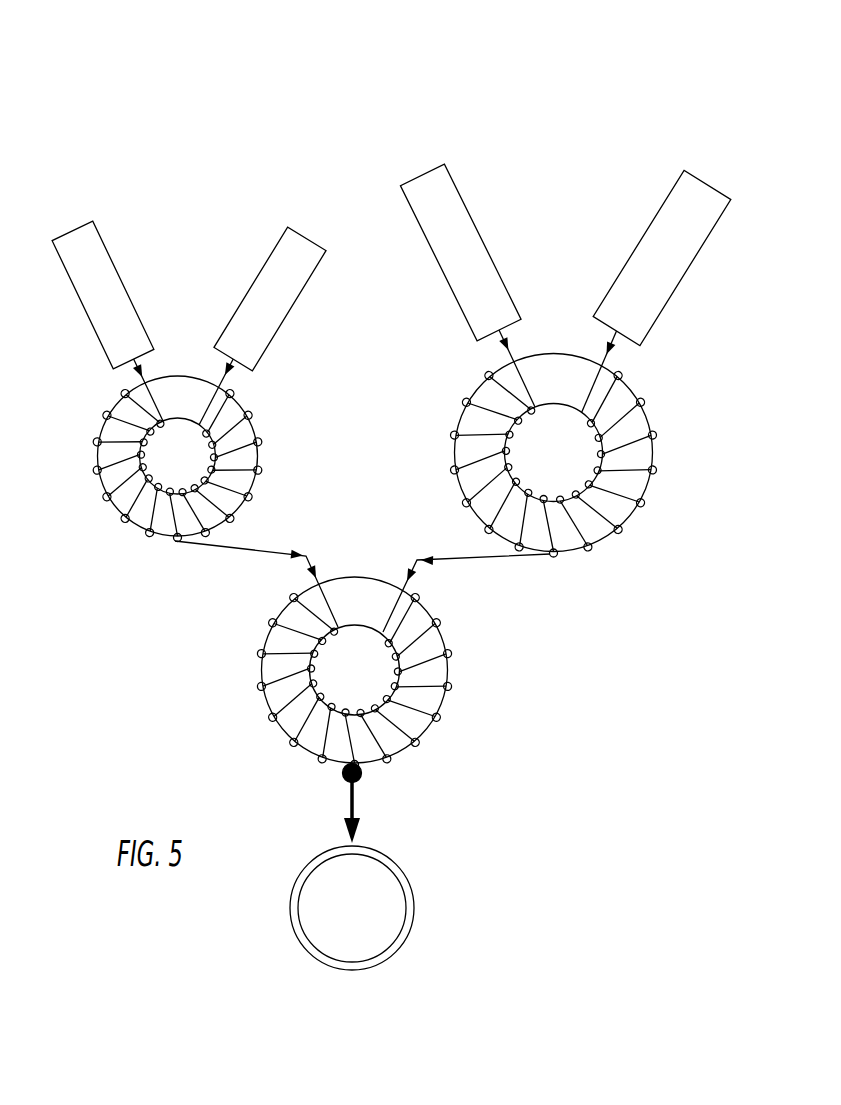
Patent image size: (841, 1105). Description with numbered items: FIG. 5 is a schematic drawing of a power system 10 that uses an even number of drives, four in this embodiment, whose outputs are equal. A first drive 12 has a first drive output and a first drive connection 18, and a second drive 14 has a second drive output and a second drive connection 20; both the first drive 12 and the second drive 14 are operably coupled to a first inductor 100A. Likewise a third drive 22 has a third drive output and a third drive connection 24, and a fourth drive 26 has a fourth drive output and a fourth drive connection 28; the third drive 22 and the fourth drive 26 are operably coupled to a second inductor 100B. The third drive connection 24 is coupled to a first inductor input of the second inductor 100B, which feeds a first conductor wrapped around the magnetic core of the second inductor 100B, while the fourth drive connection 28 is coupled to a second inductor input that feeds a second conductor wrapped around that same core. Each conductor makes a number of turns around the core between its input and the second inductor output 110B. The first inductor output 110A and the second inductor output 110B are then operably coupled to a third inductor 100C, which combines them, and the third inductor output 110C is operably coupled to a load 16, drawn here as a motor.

The system 10 is at (631, 74).
The first drive 12 is at (93, 222).
The second drive 14 is at (302, 230).
The third drive 22 is at (453, 173).
The fourth drive 26 is at (727, 193).
The first drive connection 18 is at (137, 373).
The second drive connection 20 is at (227, 378).
The third drive connection 24 is at (503, 345).
The fourth drive connection 28 is at (613, 353).
The first inductor 100A is at (106, 526).
The second inductor 100B is at (680, 488).
The third inductor 100C is at (466, 704).
The first inductor output 110A is at (266, 550).
The second inductor output 110B is at (455, 557).
The third inductor output 110C is at (355, 798).
The load 16 is at (412, 885).